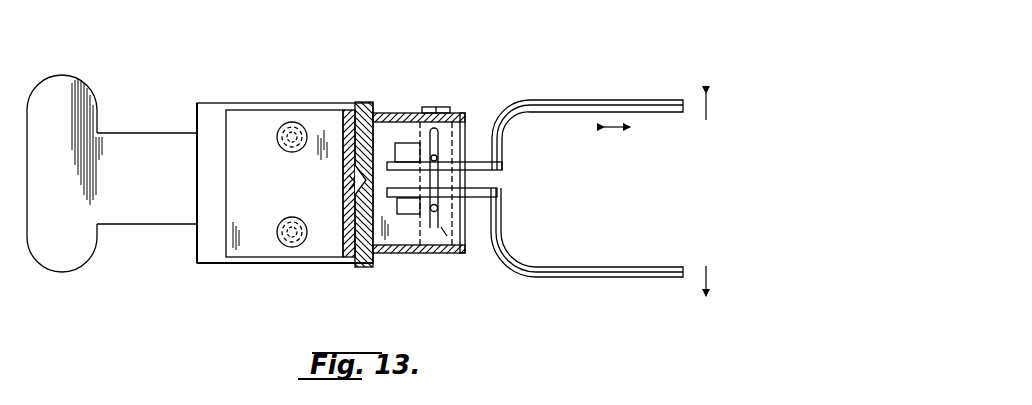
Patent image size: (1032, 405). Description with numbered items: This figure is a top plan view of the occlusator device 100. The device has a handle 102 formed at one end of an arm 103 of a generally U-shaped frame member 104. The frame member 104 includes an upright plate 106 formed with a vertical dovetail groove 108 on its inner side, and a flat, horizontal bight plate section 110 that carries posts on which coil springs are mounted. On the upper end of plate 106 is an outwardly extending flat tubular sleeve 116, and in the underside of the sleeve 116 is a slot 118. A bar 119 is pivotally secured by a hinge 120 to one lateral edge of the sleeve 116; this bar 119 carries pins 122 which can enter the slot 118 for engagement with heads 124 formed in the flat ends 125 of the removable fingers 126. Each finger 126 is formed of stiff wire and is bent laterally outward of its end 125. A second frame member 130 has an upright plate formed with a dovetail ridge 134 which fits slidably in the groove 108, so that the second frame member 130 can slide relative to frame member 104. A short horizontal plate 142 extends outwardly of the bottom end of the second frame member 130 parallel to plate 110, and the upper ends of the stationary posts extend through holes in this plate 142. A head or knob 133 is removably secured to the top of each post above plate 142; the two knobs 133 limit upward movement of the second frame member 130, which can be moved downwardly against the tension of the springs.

The occlusator device 100 is at (514, 49).
The handle 102 is at (125, 207).
The arm 103 is at (195, 117).
The frame member 104 is at (210, 267).
The upright plate 106 is at (373, 106).
The dovetail groove 108 is at (386, 137).
The bight plate section 110 is at (217, 113).
The tubular sleeve 116 is at (582, 182).
The slot 118 is at (481, 195).
The bar 119 is at (446, 252).
The hinge 120 is at (450, 107).
The pins 122 is at (433, 213).
The heads 124 is at (407, 143).
The flat ends 125 is at (478, 163).
The removable fingers 126 is at (643, 270).
The second frame member 130 is at (255, 232).
The head or knob 133 is at (300, 241).
The dovetail ridge 134 is at (353, 183).
The horizontal plate 142 is at (317, 123).